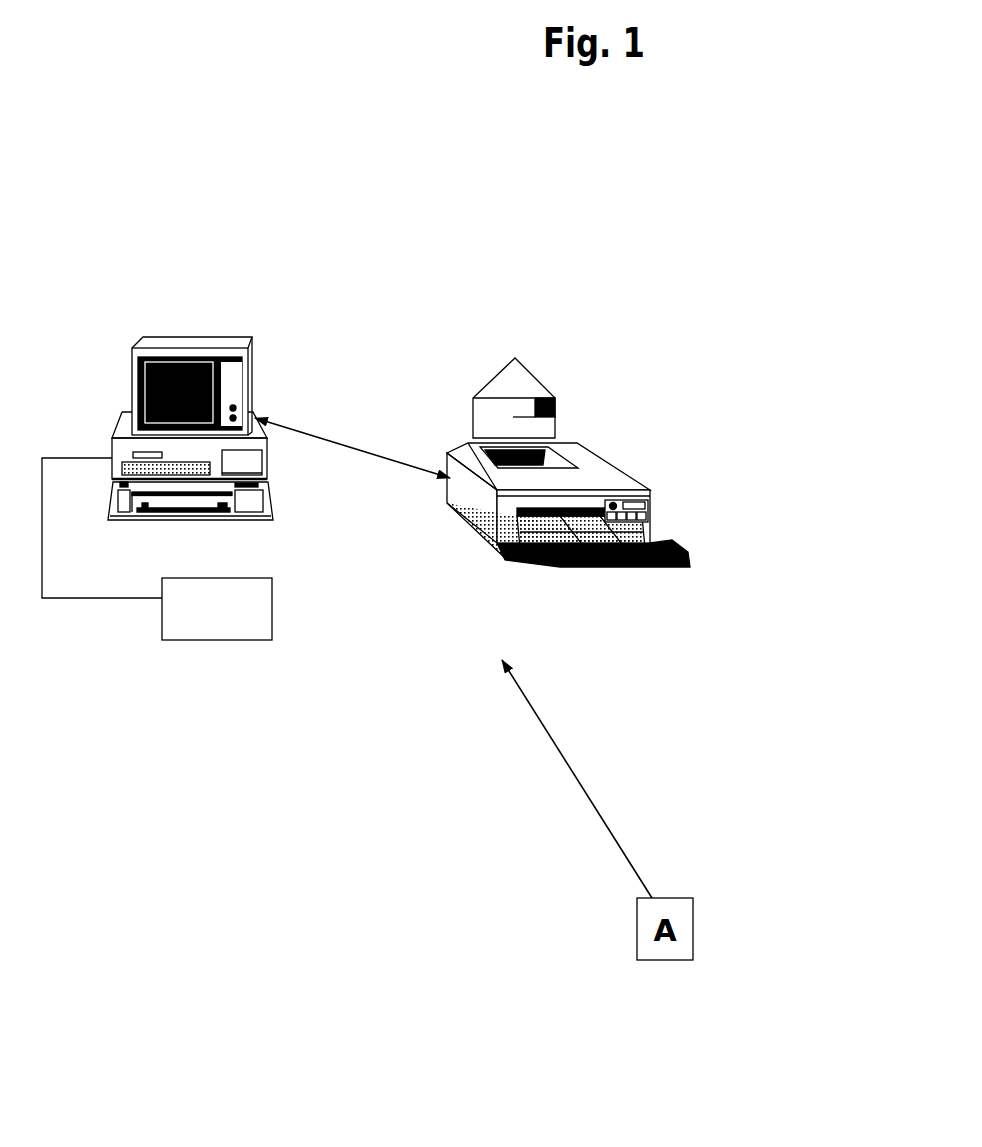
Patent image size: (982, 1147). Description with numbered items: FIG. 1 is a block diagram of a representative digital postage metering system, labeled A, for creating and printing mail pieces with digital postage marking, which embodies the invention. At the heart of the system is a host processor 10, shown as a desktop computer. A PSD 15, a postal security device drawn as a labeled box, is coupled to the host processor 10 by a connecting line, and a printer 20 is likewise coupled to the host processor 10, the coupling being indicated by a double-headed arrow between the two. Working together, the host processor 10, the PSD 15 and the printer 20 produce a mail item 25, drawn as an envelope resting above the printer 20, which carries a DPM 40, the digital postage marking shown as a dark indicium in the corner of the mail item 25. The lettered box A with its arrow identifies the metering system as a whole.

The host processor 10 is at (217, 337).
The PSD 15 is at (247, 640).
The printer 20 is at (652, 517).
The mail item 25 is at (495, 378).
The DPM 40 is at (557, 398).